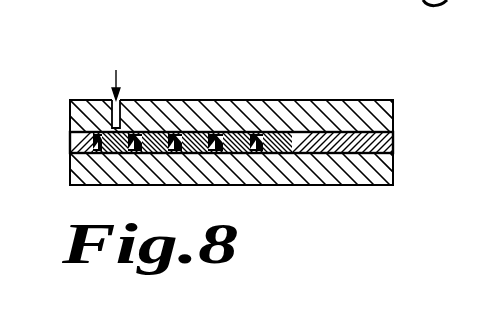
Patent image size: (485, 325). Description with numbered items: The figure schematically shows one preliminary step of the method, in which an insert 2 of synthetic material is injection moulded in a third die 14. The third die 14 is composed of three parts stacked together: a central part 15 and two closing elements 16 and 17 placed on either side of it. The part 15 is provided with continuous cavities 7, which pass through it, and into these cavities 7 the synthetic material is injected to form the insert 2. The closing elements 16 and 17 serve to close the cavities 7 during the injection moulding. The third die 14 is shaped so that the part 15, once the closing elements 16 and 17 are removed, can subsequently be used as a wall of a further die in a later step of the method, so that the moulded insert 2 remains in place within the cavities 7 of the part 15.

The third die 14 is at (235, 67).
The closing element 16 is at (384, 114).
The part 15 is at (378, 143).
The closing element 17 is at (382, 172).
The continuous cavities 7 is at (74, 141).
The insert 2 is at (238, 154).